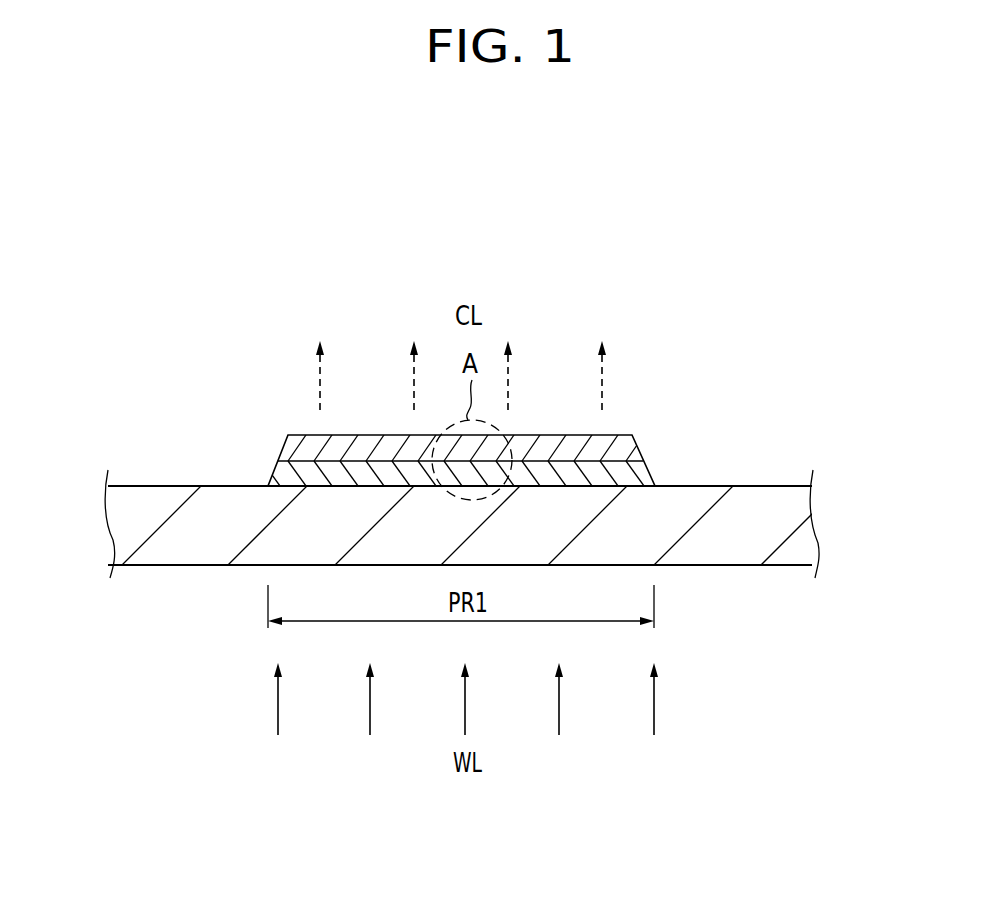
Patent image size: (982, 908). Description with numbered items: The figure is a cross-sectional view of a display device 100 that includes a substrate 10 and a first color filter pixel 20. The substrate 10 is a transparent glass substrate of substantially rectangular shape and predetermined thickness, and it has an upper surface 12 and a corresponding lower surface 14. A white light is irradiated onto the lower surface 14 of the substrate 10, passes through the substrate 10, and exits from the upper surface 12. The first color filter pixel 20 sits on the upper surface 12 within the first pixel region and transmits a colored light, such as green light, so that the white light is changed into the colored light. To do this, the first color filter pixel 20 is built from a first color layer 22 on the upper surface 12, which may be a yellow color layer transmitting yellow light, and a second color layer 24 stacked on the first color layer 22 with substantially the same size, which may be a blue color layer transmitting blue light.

The display device 100 is at (684, 395).
The substrate 10 is at (795, 513).
The upper surface 12 is at (143, 486).
The lower surface 14 is at (143, 565).
The first color filter pixel 20 is at (199, 408).
The first color layer 22 is at (288, 472).
The second color layer 24 is at (286, 450).